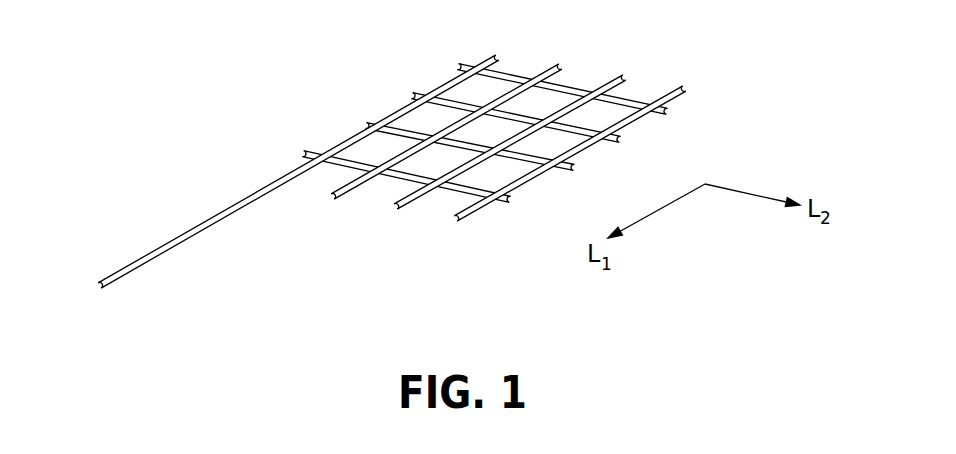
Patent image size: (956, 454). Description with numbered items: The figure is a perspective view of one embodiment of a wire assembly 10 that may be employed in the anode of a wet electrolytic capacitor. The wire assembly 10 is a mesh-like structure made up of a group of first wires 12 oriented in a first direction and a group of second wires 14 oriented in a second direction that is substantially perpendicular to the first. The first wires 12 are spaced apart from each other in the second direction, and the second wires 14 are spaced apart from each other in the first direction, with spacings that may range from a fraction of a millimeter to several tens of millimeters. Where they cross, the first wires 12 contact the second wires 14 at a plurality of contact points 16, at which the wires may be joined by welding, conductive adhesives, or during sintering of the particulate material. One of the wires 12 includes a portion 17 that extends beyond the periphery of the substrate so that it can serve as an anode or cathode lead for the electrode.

The wire assembly 10 is at (369, 156).
The first wires 12 is at (633, 122).
The second wires 14 is at (567, 85).
The contact points 16 is at (427, 97).
The portion 17 is at (187, 235).